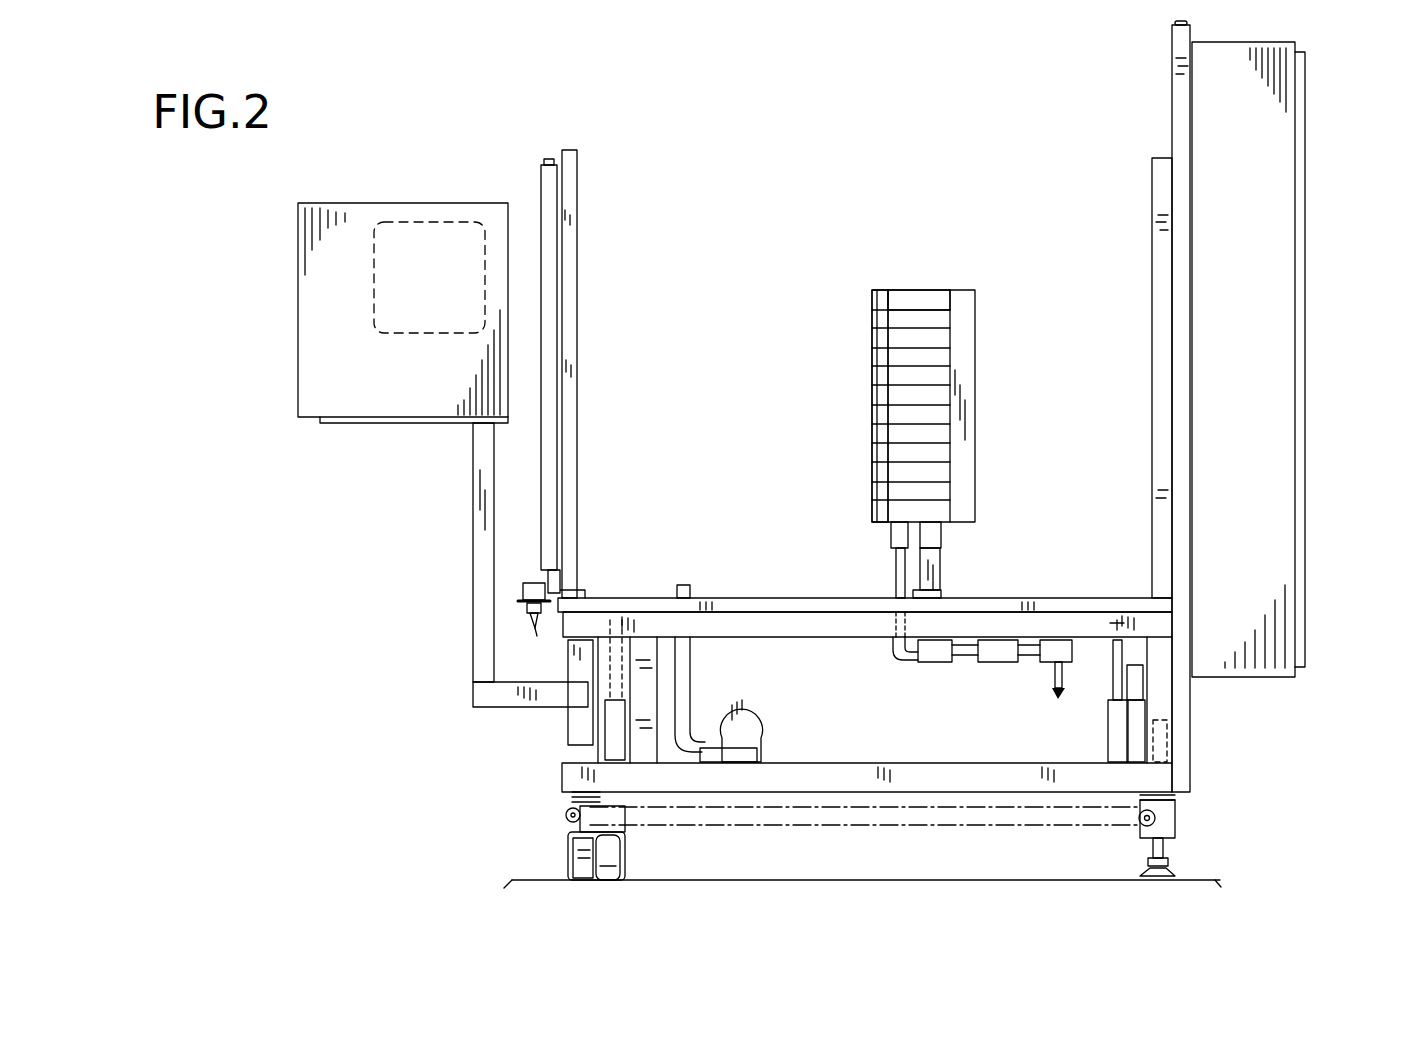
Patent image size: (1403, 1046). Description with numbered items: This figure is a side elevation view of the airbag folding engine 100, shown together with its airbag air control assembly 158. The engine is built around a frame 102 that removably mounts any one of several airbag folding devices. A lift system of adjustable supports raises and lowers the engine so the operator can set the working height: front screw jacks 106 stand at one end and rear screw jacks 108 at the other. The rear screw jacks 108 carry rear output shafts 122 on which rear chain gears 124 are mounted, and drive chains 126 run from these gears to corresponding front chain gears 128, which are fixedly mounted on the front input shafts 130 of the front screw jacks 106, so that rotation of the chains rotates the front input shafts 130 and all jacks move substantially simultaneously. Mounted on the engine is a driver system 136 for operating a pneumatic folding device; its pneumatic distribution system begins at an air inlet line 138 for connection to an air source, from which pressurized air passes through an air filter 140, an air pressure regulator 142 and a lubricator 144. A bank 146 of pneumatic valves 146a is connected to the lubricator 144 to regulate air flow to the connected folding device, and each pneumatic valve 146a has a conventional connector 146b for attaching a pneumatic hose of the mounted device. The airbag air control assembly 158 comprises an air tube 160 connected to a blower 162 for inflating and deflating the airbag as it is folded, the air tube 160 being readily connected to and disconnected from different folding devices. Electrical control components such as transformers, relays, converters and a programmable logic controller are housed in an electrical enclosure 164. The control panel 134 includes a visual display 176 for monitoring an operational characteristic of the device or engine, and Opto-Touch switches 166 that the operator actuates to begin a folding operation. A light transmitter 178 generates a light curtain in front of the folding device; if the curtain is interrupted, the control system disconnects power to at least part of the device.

The airbag folding engine 100 is at (724, 186).
The frame 102 is at (905, 770).
The front screw jacks 106 is at (560, 872).
The rear screw jacks 108 is at (1172, 878).
The rear output shafts 122 is at (1172, 818).
The rear chain gears 124 is at (1172, 830).
The drive chains 126 is at (880, 828).
The front chain gears 128 is at (568, 812).
The front input shafts 130 is at (566, 818).
The control panel 134 is at (326, 290).
The driver system 136 is at (838, 382).
The air inlet line 138 is at (1068, 685).
The air filter 140 is at (1068, 640).
The air pressure regulator 142 is at (1000, 665).
The lubricator 144 is at (940, 665).
The bank of pneumatic valves 146 is at (995, 406).
The pneumatic valve 146a is at (932, 292).
The connector 146b is at (873, 294).
The airbag air control assembly 158 is at (792, 712).
The air tube 160 is at (692, 590).
The blower 162 is at (750, 712).
The electrical enclosure 164 is at (1300, 418).
The Opto-Touch switches 166 is at (540, 580).
The visual display 176 is at (428, 235).
The light transmitter 178 is at (541, 232).